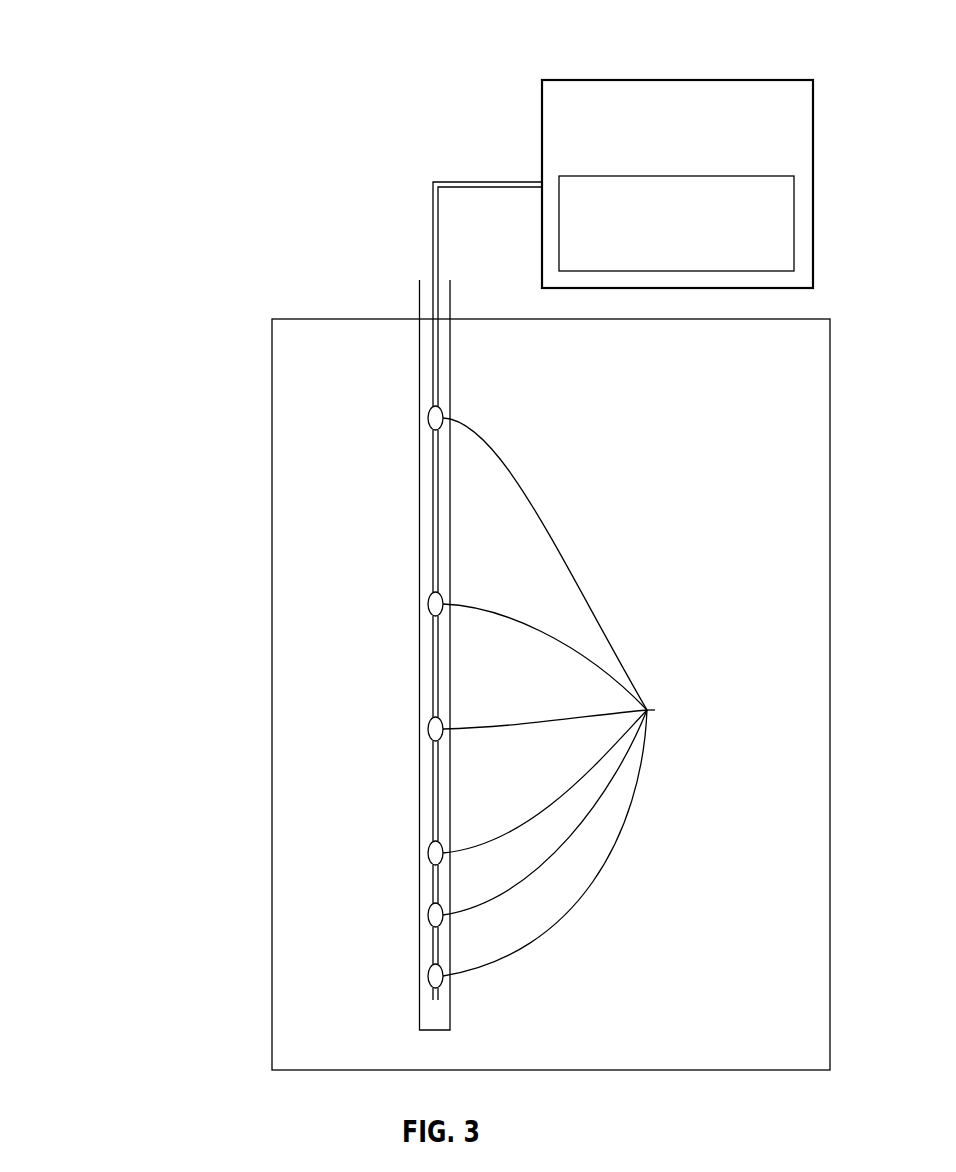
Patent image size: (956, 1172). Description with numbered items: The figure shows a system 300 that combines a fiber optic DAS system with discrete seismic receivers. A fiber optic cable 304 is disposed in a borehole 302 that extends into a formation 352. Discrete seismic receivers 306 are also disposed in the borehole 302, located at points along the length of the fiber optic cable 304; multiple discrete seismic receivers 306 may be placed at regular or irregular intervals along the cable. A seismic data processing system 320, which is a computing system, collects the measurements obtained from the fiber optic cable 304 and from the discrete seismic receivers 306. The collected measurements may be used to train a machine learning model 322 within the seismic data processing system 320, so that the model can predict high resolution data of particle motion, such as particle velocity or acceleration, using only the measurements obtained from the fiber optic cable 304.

The system 300 is at (389, 129).
The borehole 302 is at (419, 890).
The fiber optic cable 304 is at (433, 572).
The discrete seismic receivers 306 is at (602, 697).
The seismic data processing system 320 is at (609, 78).
The machine learning model 322 is at (575, 238).
The formation 352 is at (281, 362).